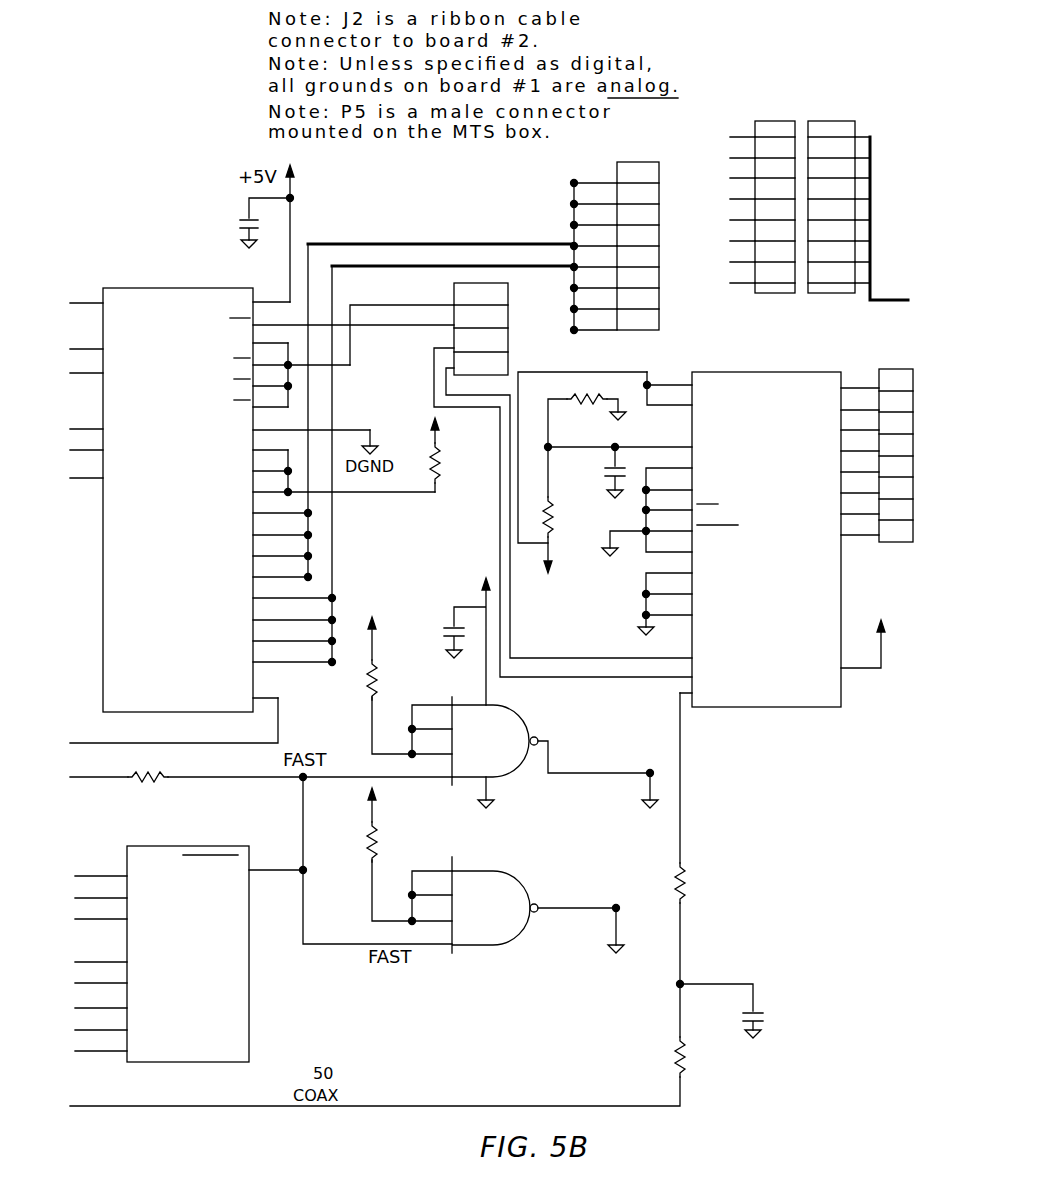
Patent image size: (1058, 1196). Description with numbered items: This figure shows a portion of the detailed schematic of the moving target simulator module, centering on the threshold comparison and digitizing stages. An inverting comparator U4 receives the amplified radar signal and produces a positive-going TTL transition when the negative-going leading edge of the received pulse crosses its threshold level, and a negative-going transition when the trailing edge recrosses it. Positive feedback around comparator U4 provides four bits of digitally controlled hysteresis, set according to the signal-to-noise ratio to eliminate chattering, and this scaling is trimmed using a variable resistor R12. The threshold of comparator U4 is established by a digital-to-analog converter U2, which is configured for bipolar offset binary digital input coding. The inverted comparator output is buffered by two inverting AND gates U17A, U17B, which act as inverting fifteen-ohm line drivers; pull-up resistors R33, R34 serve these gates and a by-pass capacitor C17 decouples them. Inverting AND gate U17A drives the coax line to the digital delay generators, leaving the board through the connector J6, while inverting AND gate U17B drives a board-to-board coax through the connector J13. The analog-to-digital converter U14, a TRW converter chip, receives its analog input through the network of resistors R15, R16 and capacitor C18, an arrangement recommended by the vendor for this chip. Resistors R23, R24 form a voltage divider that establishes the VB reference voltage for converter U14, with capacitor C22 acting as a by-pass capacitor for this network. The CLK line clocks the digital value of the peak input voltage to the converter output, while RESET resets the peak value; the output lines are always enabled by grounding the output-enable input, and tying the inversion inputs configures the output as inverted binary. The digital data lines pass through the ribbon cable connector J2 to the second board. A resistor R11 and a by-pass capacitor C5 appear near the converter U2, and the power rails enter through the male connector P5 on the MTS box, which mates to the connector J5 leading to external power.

The digital-to-analog converter U2 is at (262, 500).
The inverting comparator U4 is at (189, 954).
The analog-to-digital converter U14 is at (746, 539).
The inverting AND gate U17A is at (482, 759).
The inverting AND gate U17B is at (482, 903).
The 5K resistor R11 is at (431, 453).
The variable resistor R12 is at (261, 776).
The resistor R15 is at (680, 1057).
The resistor R16 is at (685, 883).
The resistor R23 is at (554, 524).
The resistor R24 is at (587, 409).
The pull-up resistor R33 is at (377, 675).
The pull-up resistor R34 is at (379, 853).
The 1.0 capacitor C5 is at (251, 228).
The by-pass capacitor C17 is at (451, 641).
The capacitor C18 is at (721, 1011).
The by-pass capacitor C22 is at (595, 461).
The ribbon cable connector to board #2 J2 is at (683, 340).
The power connector J5 is at (837, 213).
The male power connector on MTS box P5 is at (737, 194).
The BNC connector to DDGS J6 is at (614, 785).
The SMA connector to board #2 J13 is at (574, 913).